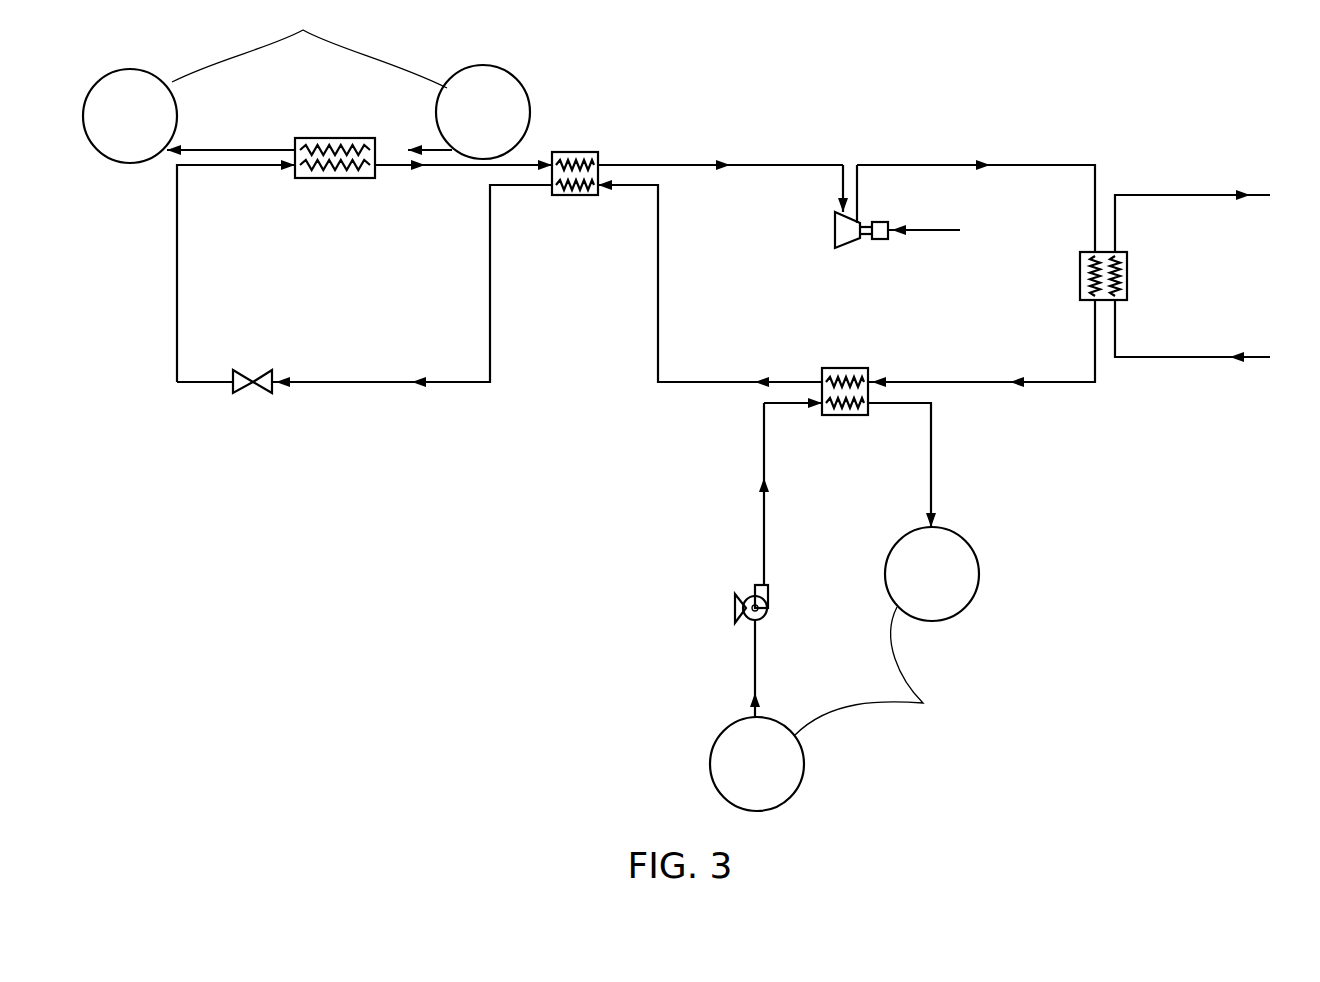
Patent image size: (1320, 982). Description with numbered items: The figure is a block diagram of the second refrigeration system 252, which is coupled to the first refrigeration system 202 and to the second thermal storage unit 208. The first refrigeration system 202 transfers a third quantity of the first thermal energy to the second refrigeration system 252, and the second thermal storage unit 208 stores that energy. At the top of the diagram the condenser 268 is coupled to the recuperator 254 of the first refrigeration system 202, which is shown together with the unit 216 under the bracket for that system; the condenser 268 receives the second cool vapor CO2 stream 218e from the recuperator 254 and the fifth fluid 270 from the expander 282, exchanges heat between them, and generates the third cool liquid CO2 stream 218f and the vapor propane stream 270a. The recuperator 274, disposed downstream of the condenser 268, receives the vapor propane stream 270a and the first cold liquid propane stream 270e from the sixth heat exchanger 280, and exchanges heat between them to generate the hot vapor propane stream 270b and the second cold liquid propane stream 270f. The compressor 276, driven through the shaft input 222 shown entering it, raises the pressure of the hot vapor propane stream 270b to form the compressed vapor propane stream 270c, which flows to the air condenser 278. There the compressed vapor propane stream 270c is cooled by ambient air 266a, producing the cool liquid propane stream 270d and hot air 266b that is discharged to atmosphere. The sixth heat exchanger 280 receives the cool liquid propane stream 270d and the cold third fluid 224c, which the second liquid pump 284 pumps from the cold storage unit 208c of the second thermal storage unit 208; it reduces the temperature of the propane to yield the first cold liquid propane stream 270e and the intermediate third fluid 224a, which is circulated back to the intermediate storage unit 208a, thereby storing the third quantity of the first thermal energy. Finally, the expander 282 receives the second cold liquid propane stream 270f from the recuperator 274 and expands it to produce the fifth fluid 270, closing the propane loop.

The first refrigeration system 202 is at (303, 30).
The compressor 216 is at (130, 116).
The recuperator 254 is at (483, 112).
The third cool liquid CO2 stream 218f is at (175, 147).
The second cool vapor CO2 stream 218e is at (408, 147).
The condenser 268 is at (336, 138).
The fifth fluid 270 is at (290, 168).
The vapor propane stream 270a is at (418, 168).
The hot vapor propane stream 270b is at (720, 161).
The compressed vapor propane stream 270c is at (977, 161).
The cool liquid propane stream 270d is at (1010, 379).
The first cold liquid propane stream 270e is at (750, 378).
The second cold liquid propane stream 270f is at (412, 378).
The recuperator 274 is at (575, 152).
The compressor 276 is at (835, 230).
The shaft power line 222 is at (928, 232).
The air condenser 278 is at (1080, 278).
The ambient air 266a is at (1236, 352).
The hot air 266b is at (1238, 192).
The sixth heat exchanger 280 is at (845, 368).
The expander 282 is at (258, 369).
The second refrigeration system 252 is at (152, 262).
The cold third fluid 224c is at (762, 482).
The intermediate third fluid 224a is at (936, 521).
The second liquid pump 284 is at (735, 608).
The intermediate storage unit 208a is at (932, 574).
The cold storage unit 208c is at (757, 764).
The second thermal storage unit 208 is at (885, 671).